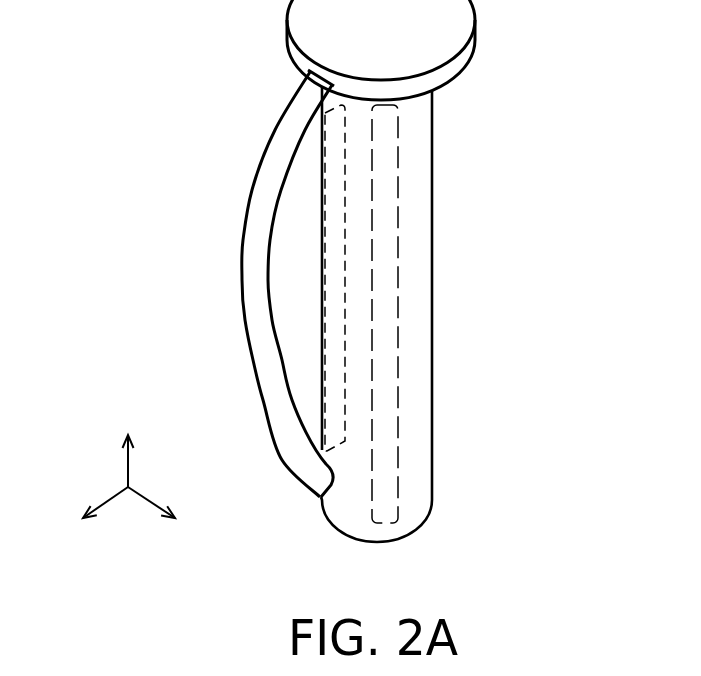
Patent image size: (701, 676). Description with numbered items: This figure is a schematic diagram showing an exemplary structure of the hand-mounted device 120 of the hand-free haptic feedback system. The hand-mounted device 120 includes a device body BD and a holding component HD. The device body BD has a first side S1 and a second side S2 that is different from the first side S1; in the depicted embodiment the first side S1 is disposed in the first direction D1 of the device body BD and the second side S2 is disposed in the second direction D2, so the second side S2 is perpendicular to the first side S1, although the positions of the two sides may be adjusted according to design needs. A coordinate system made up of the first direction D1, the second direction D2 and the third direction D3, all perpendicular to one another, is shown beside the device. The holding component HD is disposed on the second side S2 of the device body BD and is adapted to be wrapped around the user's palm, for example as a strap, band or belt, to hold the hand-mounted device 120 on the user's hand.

The hand-mounted device 120 is at (361, 274).
The holding component HD is at (251, 274).
The device body BD is at (422, 430).
The first side S1 is at (397, 180).
The second side S2 is at (330, 187).
The first direction D1 is at (166, 520).
The second direction D2 is at (90, 520).
The third direction D3 is at (130, 442).